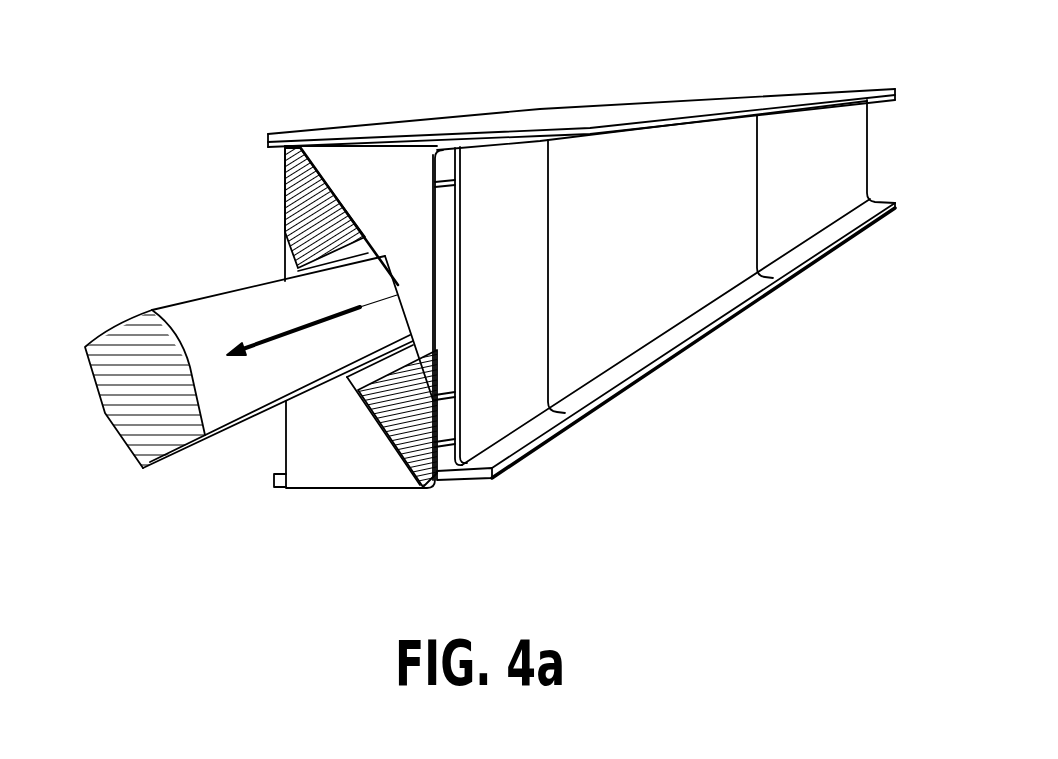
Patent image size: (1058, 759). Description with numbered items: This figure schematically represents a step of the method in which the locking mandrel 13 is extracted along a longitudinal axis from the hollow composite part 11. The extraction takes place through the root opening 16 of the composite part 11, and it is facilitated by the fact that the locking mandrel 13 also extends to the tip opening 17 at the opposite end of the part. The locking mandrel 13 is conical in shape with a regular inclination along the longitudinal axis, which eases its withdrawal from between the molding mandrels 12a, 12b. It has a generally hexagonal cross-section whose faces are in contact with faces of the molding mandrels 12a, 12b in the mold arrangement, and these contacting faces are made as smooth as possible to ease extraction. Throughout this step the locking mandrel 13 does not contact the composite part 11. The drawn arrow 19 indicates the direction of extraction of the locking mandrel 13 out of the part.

The composite part 11 is at (502, 180).
The molding mandrel 12a is at (405, 393).
The molding mandrel 12b is at (420, 275).
The locking mandrel 13 is at (235, 397).
The root opening 16 is at (260, 192).
The tip opening 17 is at (873, 148).
The bar 19 is at (249, 395).